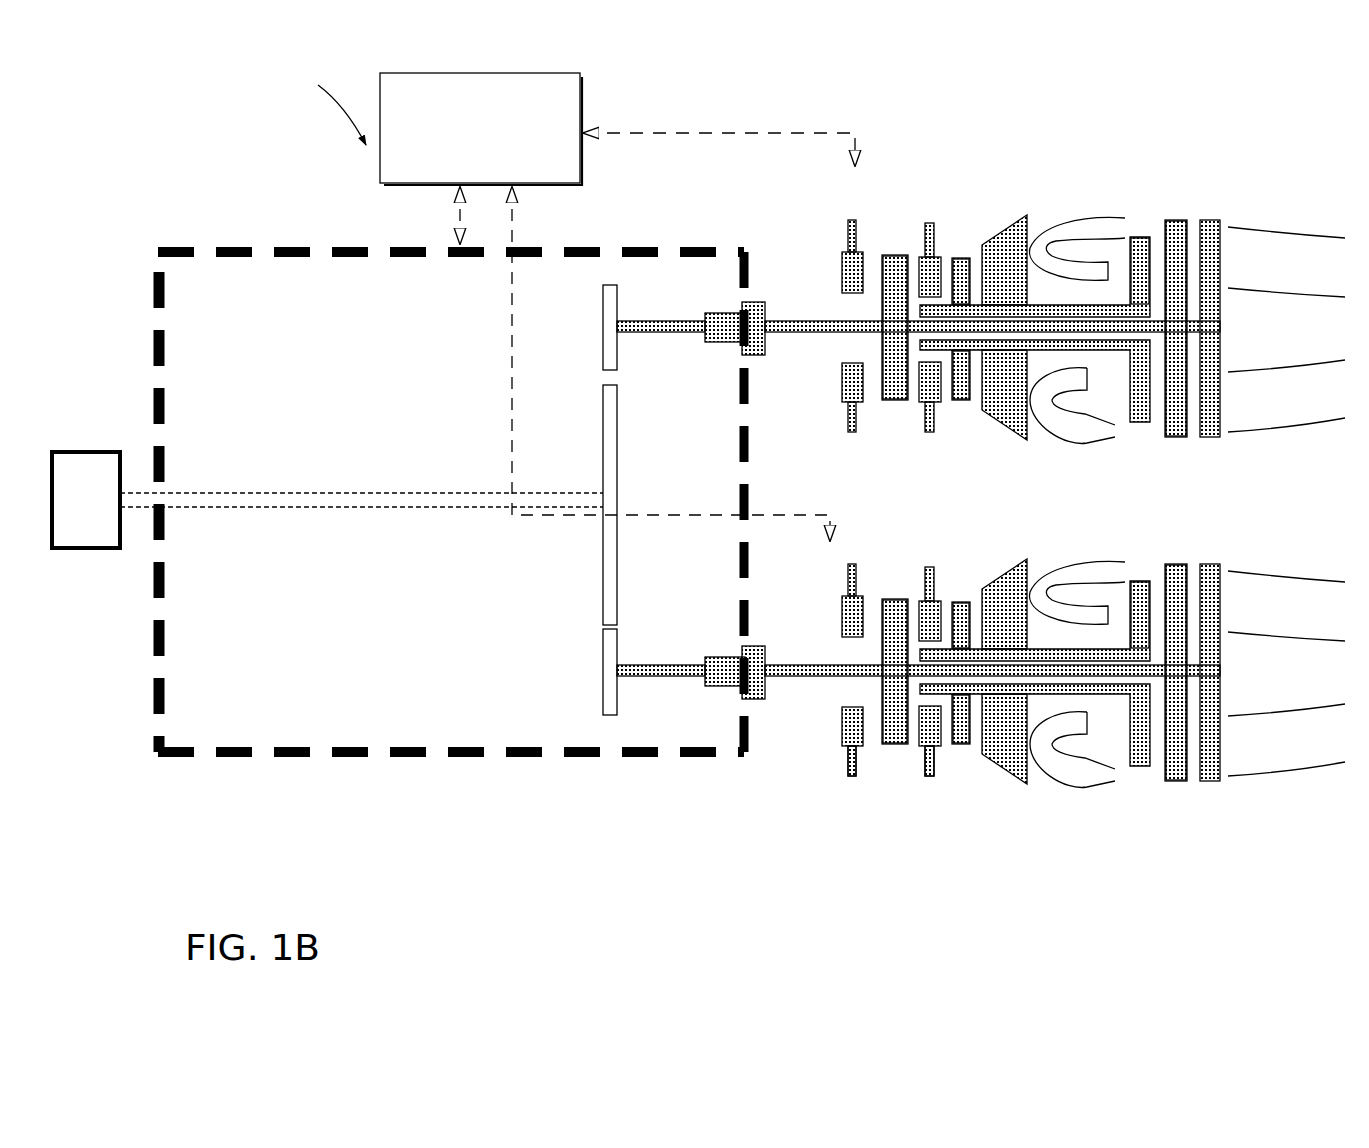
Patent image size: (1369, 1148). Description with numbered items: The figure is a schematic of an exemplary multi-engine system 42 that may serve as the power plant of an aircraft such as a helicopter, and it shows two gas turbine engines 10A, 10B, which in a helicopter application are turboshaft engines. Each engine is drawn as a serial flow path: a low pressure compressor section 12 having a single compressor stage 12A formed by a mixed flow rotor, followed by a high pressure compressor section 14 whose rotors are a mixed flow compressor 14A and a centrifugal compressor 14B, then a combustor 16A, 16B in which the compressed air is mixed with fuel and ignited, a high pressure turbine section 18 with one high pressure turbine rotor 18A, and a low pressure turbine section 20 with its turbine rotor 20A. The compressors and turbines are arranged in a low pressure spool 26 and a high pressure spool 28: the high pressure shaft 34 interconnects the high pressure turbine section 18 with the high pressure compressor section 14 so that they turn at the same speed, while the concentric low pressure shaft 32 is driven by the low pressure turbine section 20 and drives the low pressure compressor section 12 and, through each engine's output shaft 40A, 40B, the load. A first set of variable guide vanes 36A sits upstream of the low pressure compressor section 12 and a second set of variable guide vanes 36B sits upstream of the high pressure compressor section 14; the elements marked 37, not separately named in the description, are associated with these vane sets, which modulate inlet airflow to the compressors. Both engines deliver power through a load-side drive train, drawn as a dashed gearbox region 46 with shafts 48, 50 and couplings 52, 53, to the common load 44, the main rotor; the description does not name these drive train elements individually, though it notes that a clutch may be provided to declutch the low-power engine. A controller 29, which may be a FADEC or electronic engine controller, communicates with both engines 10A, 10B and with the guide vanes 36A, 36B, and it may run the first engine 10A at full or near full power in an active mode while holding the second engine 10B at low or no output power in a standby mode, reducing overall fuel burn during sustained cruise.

The first gas turbine engine 10A is at (1130, 163).
The second gas turbine engine 10B is at (1134, 843).
The low pressure compressor section 12 is at (897, 255).
The compressor stage 12A is at (895, 499).
The high pressure compressor section 14 is at (961, 193).
The mixed flow rotor compressor 14A is at (958, 258).
The centrifugal compressor 14B is at (958, 602).
The winding of second machine 16A is at (1072, 795).
The winding of first machine 16B is at (1072, 452).
The high pressure turbine section 18 is at (1106, 192).
The high pressure turbine 18A is at (1133, 251).
The low pressure turbine section 20 is at (1176, 440).
The bearing plates 20A is at (1210, 220).
The low pressure spool 26 is at (1232, 329).
The high pressure spool 28 is at (1041, 288).
The controller 29 is at (583, 110).
The low pressure shaft 32 is at (985, 330).
The high pressure shaft 34 is at (1107, 348).
The first set of variable guide vanes 36A is at (846, 428).
The second set of variable guide vanes 36B is at (925, 428).
The sensor lead 37 is at (846, 792).
The first electrical connection 40A is at (795, 321).
The second electrical connection 40B is at (795, 680).
The multi-engine system 42 is at (233, 163).
The common load 44 is at (80, 450).
The gearbox 46 is at (405, 757).
The gearbox output shaft 48 is at (662, 320).
The input shaft 50 is at (140, 508).
The coupling 52 is at (739, 646).
The coupling 53 is at (756, 294).